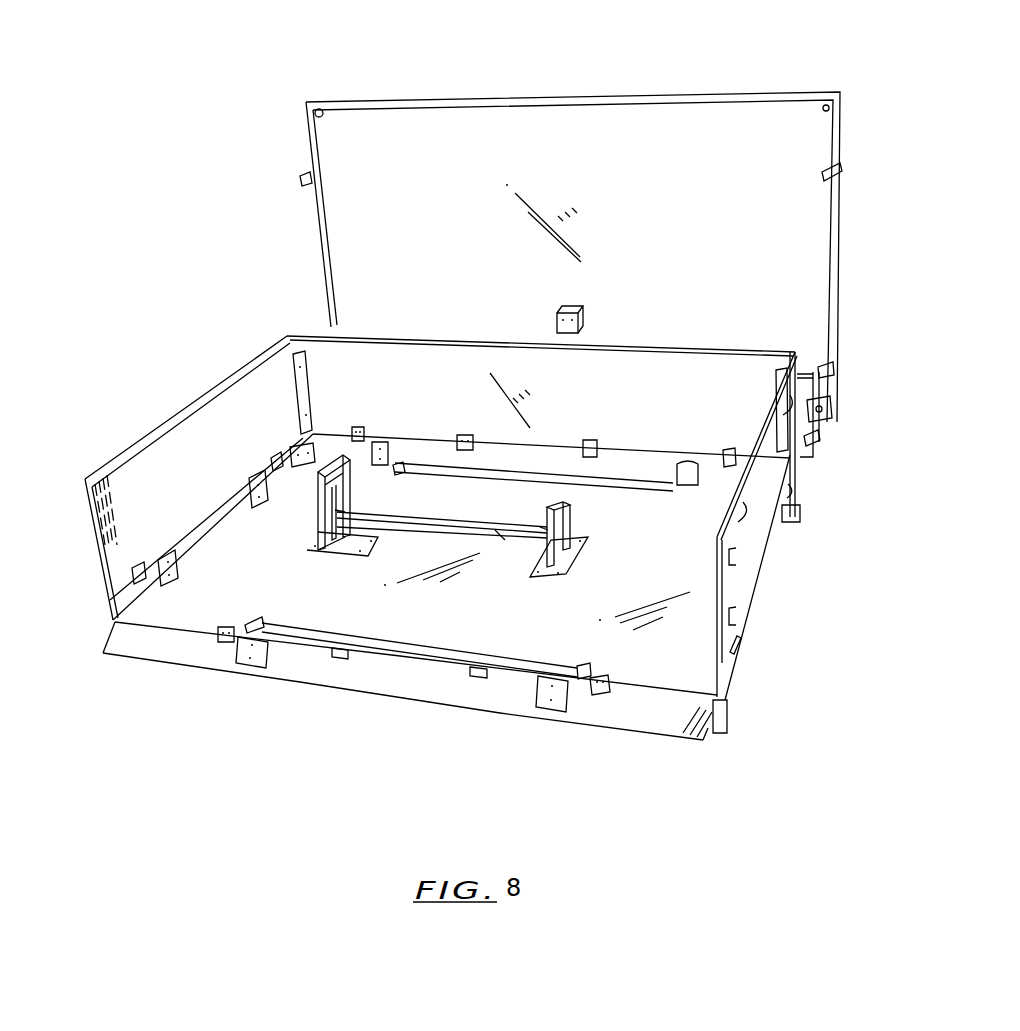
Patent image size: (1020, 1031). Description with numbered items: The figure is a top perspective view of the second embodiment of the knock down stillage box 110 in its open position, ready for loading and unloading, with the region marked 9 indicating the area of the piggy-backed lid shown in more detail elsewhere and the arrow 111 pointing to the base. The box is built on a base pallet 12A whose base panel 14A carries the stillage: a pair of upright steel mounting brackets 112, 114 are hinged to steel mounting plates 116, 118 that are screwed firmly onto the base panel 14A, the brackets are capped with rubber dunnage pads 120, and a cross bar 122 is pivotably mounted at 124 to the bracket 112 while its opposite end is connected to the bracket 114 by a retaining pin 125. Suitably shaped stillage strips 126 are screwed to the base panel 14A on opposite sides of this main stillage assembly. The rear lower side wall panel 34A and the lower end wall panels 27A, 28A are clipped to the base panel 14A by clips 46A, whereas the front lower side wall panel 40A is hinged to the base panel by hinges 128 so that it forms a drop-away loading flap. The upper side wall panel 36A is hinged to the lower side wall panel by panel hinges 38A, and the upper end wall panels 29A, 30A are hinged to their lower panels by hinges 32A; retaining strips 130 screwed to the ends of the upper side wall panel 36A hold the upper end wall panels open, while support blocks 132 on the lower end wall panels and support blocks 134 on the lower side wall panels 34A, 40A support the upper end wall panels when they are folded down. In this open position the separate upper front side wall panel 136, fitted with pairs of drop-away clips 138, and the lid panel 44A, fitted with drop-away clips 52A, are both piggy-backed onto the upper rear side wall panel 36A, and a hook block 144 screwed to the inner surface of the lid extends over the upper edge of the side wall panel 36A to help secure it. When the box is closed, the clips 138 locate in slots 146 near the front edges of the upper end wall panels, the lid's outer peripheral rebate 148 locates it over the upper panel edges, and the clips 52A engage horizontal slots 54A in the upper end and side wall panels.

The outer peripheral rebate 148 is at (475, 97).
The lid panel 44A is at (586, 173).
The drop-away clips 52A is at (298, 178).
The hook block 144 is at (558, 302).
The knock down stillage box 110 is at (258, 256).
The section view indicator 9 is at (256, 330).
The upper side wall panel 36A is at (470, 388).
The upper end wall panel 29A is at (200, 476).
The lower end wall panel 27A is at (213, 531).
The front lower side wall panel 40A is at (440, 699).
The base pallet 12A is at (783, 575).
The slots 146 is at (730, 615).
The lower end wall panel 28A is at (745, 627).
The clips 46A is at (740, 655).
The upper end wall panel 30A is at (770, 501).
The upper front side wall panel 136 is at (803, 460).
The drop-away clips 138 is at (832, 402).
The retaining strips 130 is at (308, 380).
The panel hinges 38A is at (358, 428).
The lower side wall panel 34A is at (518, 456).
The support blocks 134 is at (388, 450).
The stillage strips 126 is at (557, 462).
The horizontal slots 54A is at (785, 408).
The hinges 32A is at (278, 453).
The support blocks 132 is at (258, 473).
The mounting bracket 112 is at (348, 493).
The mounting bracket 114 is at (570, 527).
The cross bar 122 is at (453, 520).
The mounting plate 116 is at (365, 533).
The rubber dunnage pads 120 is at (305, 487).
The pivot mounting 124 is at (343, 557).
The mounting plate 118 is at (540, 580).
The retaining pin 125 is at (500, 540).
The base panel 14A is at (470, 608).
The floor support region 111 is at (288, 556).
The hinges 128 is at (228, 627).